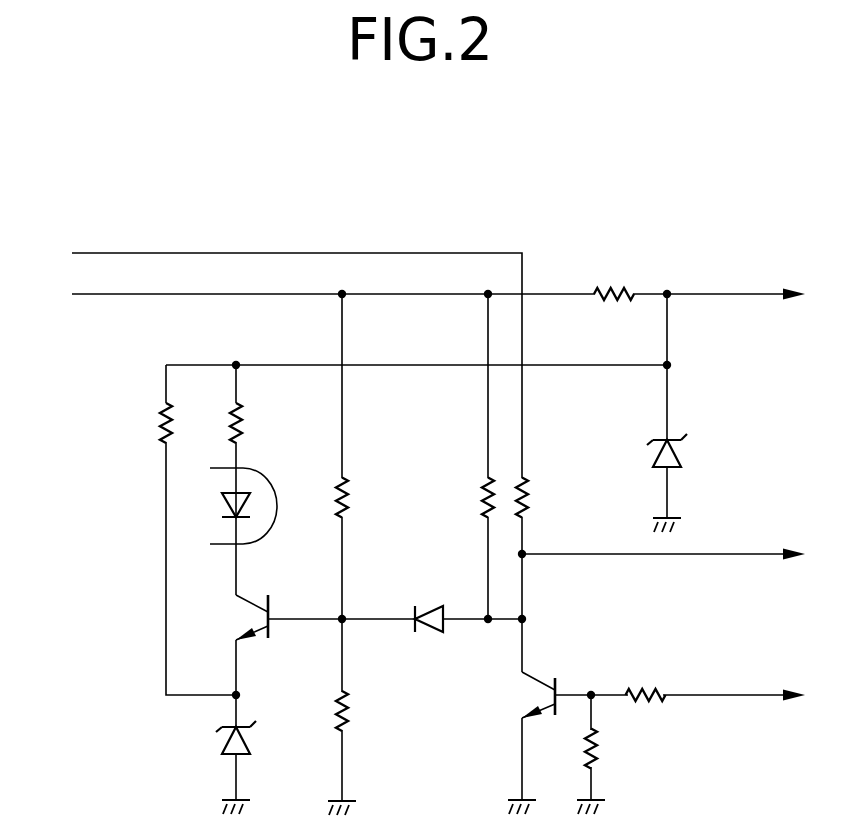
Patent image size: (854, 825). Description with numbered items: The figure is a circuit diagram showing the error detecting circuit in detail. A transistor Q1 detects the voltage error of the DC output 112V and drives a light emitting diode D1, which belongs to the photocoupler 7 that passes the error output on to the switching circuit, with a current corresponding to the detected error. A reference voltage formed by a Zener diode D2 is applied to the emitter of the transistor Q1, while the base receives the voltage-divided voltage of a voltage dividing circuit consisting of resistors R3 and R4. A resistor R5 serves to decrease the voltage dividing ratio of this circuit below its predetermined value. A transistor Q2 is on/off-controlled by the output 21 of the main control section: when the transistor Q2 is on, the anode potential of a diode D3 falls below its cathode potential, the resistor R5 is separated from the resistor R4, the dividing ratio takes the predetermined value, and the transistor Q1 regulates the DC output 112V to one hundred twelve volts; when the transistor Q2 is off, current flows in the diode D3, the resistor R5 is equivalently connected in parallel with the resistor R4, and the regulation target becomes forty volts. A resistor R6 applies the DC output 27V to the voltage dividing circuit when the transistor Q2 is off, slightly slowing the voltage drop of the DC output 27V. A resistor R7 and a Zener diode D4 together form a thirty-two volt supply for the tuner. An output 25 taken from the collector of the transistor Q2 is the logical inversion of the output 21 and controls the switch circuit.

The photocoupler 7 is at (217, 546).
The output of the main control section 21 is at (718, 697).
The output 25 is at (718, 556).
The DC output 27V is at (143, 253).
The DC output 112V is at (90, 296).
The light emitting diode D1 is at (230, 551).
The Zener diode D2 is at (263, 767).
The diode D3 is at (432, 598).
The Zener diode D4 is at (692, 413).
The transistor Q1 is at (289, 602).
The transistor Q2 is at (544, 728).
The resistor R3 is at (368, 493).
The resistor R4 is at (364, 753).
The resistor R5 is at (462, 456).
The resistor R6 is at (549, 575).
The resistor R7 is at (699, 275).